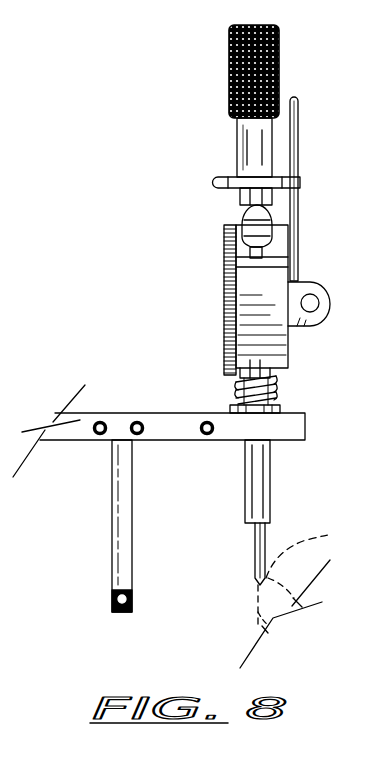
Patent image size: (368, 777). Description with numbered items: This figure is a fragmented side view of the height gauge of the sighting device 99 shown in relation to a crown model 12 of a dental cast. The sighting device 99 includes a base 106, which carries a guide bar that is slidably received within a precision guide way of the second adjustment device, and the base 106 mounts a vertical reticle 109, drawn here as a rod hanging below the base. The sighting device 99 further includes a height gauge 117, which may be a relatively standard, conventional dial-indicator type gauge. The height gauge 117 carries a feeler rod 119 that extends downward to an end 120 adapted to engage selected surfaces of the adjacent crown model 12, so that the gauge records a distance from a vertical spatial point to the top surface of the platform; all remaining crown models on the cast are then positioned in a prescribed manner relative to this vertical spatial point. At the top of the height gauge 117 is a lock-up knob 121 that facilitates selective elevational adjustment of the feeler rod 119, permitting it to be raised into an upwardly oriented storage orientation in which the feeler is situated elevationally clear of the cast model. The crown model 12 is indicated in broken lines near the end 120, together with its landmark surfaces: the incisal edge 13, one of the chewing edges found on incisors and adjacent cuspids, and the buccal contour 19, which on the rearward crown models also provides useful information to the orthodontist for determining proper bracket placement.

The sighting device 99 is at (231, 219).
The base 106 is at (80, 442).
The vertical reticle 109 is at (112, 560).
The height gauge 117 is at (223, 298).
The feeler rod 119 is at (245, 505).
The end 120 is at (256, 579).
The lock-up knob 121 is at (229, 90).
The crown model 12 is at (297, 592).
The incisal edge 13 is at (257, 588).
The buccal contour 19 is at (258, 612).